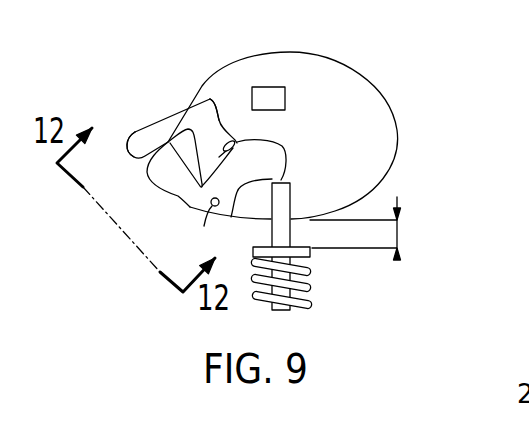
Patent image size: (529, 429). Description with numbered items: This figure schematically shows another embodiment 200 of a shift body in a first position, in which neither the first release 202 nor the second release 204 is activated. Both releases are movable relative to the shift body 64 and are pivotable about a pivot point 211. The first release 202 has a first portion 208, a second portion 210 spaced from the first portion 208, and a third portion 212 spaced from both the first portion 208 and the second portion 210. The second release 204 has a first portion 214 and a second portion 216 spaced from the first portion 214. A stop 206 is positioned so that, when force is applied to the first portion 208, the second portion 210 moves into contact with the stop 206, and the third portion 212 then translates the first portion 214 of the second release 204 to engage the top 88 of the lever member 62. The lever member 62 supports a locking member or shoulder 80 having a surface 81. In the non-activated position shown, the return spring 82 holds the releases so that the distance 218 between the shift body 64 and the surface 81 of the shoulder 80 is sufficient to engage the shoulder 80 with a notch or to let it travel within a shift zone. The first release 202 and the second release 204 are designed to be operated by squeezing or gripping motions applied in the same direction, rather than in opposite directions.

The shift body embodiment 200 is at (386, 71).
The first release 202 is at (164, 113).
The second release 204 is at (137, 201).
The stop 206 is at (266, 87).
The first portion of first release 208 is at (134, 133).
The second portion of first release 210 is at (213, 100).
The pivot point 211 is at (198, 228).
The third portion of first release 212 is at (236, 141).
The first portion of second release 214 is at (288, 159).
The second portion of second release 216 is at (152, 181).
The distance 218 is at (398, 236).
The shift body 64 is at (395, 129).
The lever member 62 is at (272, 239).
The locking member or shoulder 80 is at (311, 252).
The surface 81 is at (291, 252).
The return spring 82 is at (311, 306).
The top of lever member 88 is at (292, 191).